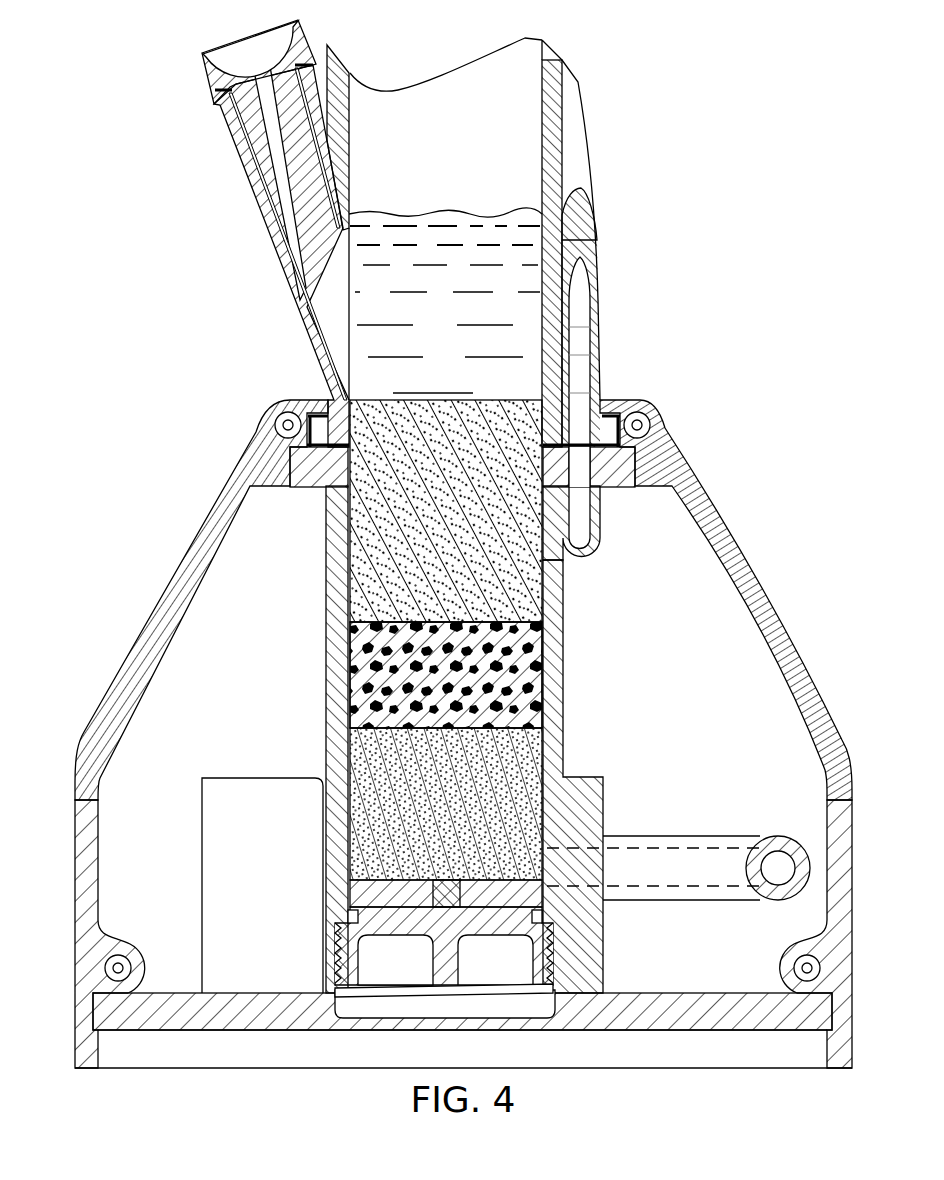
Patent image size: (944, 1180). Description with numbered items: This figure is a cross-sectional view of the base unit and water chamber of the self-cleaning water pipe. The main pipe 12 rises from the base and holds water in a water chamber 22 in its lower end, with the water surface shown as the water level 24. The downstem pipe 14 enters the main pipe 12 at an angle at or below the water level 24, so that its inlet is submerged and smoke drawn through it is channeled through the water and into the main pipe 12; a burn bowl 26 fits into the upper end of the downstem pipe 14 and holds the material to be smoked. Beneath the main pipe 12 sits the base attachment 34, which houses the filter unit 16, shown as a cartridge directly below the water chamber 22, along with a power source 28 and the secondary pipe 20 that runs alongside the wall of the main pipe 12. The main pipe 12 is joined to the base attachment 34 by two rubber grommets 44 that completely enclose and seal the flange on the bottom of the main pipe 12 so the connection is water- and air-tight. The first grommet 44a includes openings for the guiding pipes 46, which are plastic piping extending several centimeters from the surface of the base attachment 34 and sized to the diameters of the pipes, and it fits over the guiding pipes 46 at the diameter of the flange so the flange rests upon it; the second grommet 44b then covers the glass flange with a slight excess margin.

The main pipe 12 is at (432, 148).
The downstem pipe 14 is at (285, 212).
The filter unit 16 is at (375, 578).
The secondary pipe 20 is at (598, 256).
The water chamber 22 is at (495, 388).
The water level 24 is at (484, 212).
The burn bowl 26 is at (207, 76).
The power source 28 is at (221, 778).
The base attachment 34 is at (180, 468).
The rubber grommets 44 is at (494, 421).
The first grommet 44a is at (603, 421).
The second grommet 44b is at (630, 470).
The guiding pipes 46 is at (597, 541).